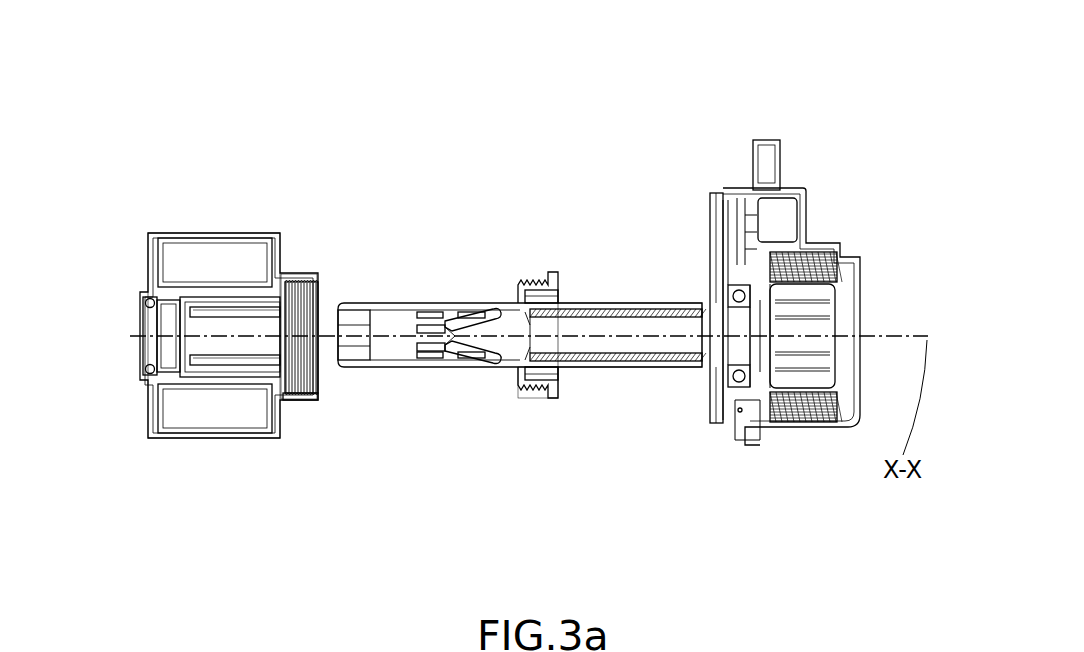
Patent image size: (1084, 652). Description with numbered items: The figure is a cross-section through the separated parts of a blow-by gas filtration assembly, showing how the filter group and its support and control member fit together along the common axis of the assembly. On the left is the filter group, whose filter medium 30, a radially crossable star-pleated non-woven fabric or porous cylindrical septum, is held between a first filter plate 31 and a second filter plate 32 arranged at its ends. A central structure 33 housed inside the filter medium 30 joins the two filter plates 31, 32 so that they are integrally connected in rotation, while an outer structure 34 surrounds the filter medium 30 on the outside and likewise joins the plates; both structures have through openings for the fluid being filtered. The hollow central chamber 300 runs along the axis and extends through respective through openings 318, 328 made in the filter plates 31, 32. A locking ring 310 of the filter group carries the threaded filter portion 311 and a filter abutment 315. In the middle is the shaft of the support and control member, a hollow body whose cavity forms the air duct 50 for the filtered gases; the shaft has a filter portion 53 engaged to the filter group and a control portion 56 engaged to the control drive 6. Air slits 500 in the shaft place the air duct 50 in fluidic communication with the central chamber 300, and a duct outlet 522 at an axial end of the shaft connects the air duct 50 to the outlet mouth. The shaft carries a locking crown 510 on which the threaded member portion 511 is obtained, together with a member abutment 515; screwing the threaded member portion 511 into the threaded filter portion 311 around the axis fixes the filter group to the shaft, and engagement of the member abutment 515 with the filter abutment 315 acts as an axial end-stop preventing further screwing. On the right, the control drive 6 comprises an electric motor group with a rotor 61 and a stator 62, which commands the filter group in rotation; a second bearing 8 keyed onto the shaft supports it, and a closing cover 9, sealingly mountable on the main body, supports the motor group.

The control drive 6 is at (816, 245).
The second bearing 8 is at (713, 277).
The closing cover 9 is at (768, 122).
The filter medium 30 is at (190, 256).
The first filter plate 31 is at (284, 256).
The second filter plate 32 is at (148, 258).
The central structure 33 is at (237, 292).
The outer structure 34 is at (220, 433).
The air duct 50 is at (397, 322).
The filter portion 53 is at (458, 391).
The control portion 56 is at (668, 391).
The rotor 61 is at (826, 294).
The stator 62 is at (840, 250).
The central chamber 300 is at (188, 323).
The locking ring 310 is at (313, 408).
The threaded filter portion 311 is at (260, 367).
The filter abutment 315 is at (321, 394).
The through opening 318 is at (308, 366).
The through opening 328 is at (150, 352).
The air slits 500 is at (477, 316).
The locking crown 510 is at (572, 342).
The threaded member portion 511 is at (535, 398).
The member abutment 515 is at (556, 272).
The duct outlet 522 is at (352, 315).